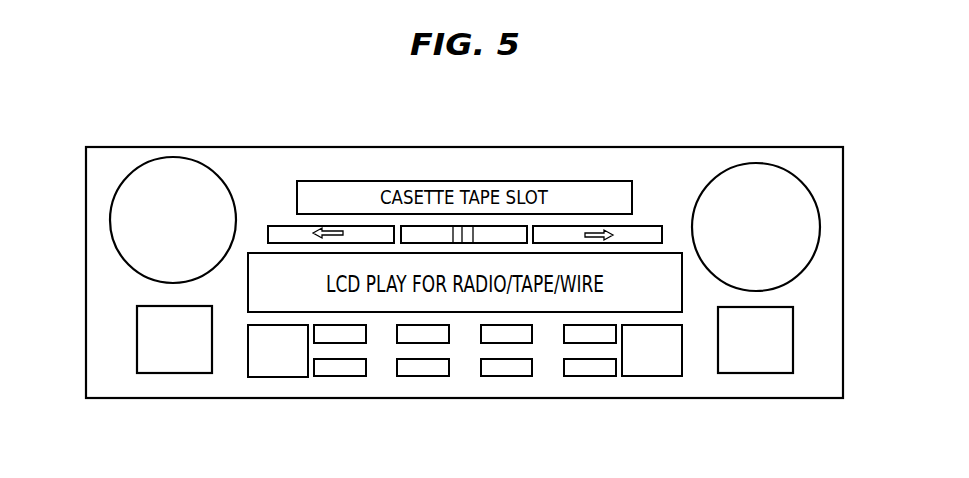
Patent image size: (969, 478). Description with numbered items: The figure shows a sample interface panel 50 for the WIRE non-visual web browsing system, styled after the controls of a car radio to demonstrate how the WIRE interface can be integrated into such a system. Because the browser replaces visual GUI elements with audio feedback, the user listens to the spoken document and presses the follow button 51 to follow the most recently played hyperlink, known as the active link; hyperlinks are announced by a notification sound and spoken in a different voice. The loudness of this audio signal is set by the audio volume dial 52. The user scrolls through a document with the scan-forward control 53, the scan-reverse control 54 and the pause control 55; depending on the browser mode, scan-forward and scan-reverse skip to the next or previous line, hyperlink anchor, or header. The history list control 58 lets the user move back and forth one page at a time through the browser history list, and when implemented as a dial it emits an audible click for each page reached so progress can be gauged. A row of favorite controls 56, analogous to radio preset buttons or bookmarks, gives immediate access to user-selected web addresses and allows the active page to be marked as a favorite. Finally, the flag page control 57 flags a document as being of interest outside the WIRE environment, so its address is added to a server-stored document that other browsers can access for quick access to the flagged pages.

The interface panel 50 is at (128, 147).
The follow button 51 is at (137, 338).
The audio volume dial 52 is at (820, 222).
The scan-forward control 53 is at (645, 226).
The scan-reverse control 54 is at (281, 226).
The pause control 55 is at (503, 226).
The favorite controls 56 is at (620, 412).
The flag page control 57 is at (793, 338).
The history list control 58 is at (111, 222).